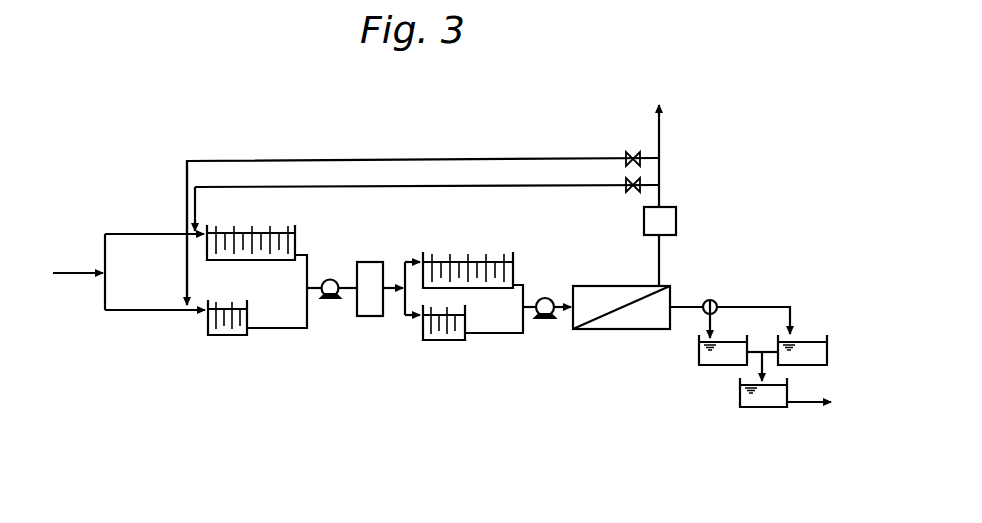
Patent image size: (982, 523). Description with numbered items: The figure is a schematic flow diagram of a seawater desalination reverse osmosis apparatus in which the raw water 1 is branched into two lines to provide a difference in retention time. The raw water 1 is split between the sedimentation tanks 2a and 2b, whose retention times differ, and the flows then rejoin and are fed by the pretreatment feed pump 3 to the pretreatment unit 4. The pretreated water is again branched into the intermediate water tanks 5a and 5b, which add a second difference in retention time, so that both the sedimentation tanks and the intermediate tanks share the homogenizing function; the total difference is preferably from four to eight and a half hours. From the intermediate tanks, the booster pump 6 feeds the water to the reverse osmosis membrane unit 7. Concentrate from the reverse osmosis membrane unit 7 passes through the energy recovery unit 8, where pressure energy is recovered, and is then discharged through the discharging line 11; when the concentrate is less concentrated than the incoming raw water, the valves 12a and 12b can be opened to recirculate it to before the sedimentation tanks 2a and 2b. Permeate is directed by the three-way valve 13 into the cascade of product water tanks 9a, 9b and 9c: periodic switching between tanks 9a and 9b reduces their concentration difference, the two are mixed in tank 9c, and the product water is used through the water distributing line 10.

The raw water 1 is at (97, 273).
The sedimentation tank 2a is at (253, 262).
The sedimentation tank 2b is at (203, 325).
The pretreatment feed pump 3 is at (328, 300).
The pretreatment unit 4 is at (375, 262).
The intermediate water tank 5a is at (467, 260).
The intermediate water tank 5b is at (445, 342).
The booster pump 6 is at (540, 318).
The reverse osmosis membrane unit 7 is at (632, 332).
The energy recovery unit 8 is at (677, 227).
The product water tank 9a is at (698, 352).
The product water tank 9b is at (807, 340).
The product water tank 9c is at (770, 410).
The water distributing line 10 is at (812, 407).
The discharging line 11 is at (662, 142).
The valve 12a is at (625, 155).
The valve 12b is at (623, 188).
The three-way valve 13 is at (712, 295).